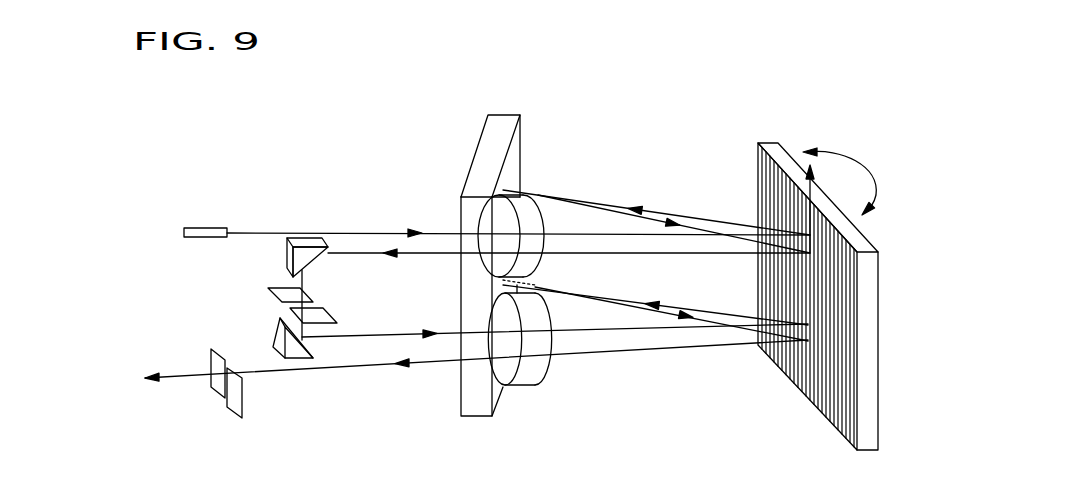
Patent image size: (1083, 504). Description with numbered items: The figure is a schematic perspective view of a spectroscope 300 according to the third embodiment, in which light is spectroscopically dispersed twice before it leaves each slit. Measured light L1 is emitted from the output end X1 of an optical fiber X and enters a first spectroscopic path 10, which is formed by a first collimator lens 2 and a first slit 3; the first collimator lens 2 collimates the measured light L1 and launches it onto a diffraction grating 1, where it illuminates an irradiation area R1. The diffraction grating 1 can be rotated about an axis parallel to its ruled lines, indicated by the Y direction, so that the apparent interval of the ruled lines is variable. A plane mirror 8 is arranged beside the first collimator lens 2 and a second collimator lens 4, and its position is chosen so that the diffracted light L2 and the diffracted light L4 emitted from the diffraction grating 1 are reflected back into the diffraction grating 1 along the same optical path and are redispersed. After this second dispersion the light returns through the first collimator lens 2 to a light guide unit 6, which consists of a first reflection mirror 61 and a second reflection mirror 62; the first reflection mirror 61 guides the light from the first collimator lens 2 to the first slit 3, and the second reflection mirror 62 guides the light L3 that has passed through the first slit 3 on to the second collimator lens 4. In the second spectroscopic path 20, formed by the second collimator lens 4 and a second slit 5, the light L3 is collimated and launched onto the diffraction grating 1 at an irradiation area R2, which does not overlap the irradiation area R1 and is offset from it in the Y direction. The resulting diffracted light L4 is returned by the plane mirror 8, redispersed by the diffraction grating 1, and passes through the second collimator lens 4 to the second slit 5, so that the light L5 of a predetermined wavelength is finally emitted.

The diffraction grating 1 is at (873, 322).
The first collimator lens 2 is at (502, 222).
The first slit 3 is at (341, 302).
The second collimator lens 4 is at (522, 388).
The second slit 5 is at (212, 408).
The light guide unit 6 is at (218, 243).
The plane mirror 8 is at (505, 122).
The first spectroscopic path 10 is at (142, 254).
The second spectroscopic path 20 is at (126, 353).
The first reflection mirror 61 is at (287, 250).
The second reflection mirror 62 is at (277, 328).
The spectroscope 300 is at (846, 98).
The optical fiber X is at (200, 228).
The output end X1 is at (228, 230).
The Y direction Y is at (821, 206).
The measured light L1 is at (378, 232).
The diffracted light L2 is at (615, 205).
The light L3 is at (411, 332).
The diffracted light L4 is at (670, 302).
The light L5 is at (168, 373).
The irradiation area R1 is at (812, 236).
The irradiation area R2 is at (807, 323).